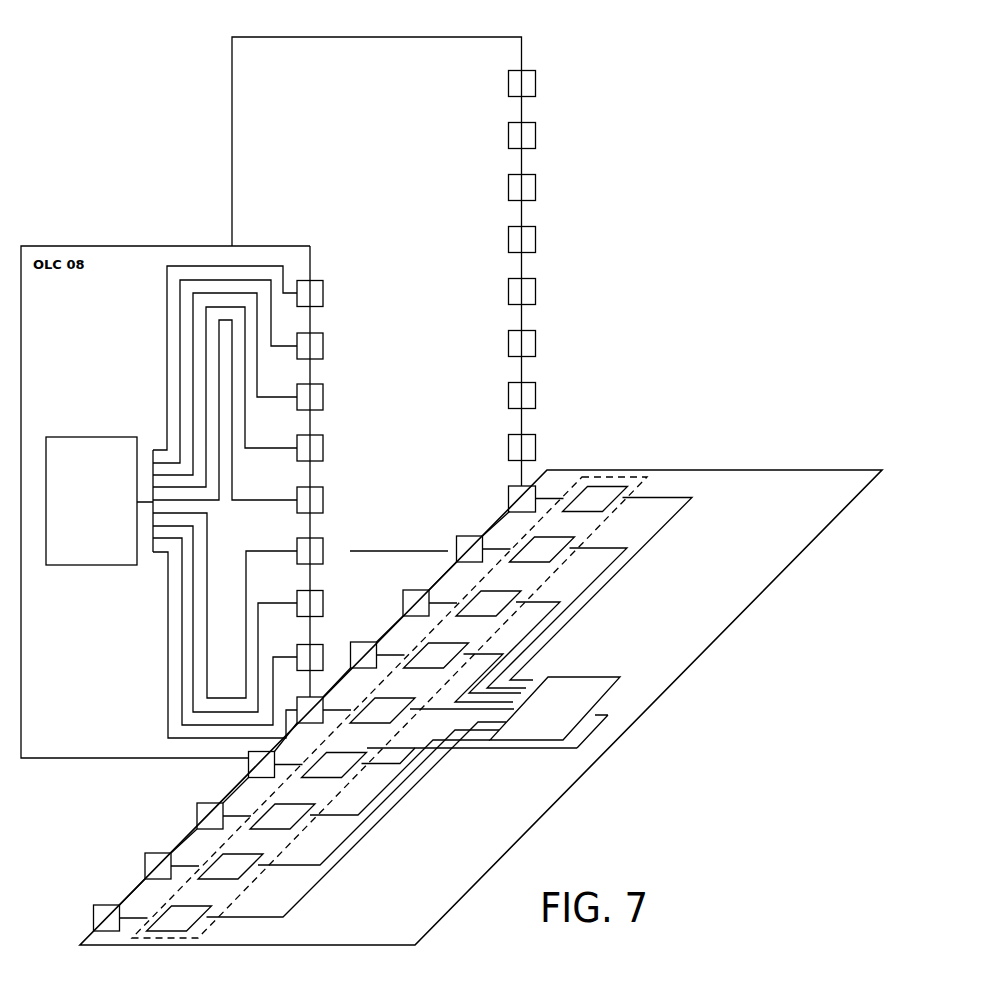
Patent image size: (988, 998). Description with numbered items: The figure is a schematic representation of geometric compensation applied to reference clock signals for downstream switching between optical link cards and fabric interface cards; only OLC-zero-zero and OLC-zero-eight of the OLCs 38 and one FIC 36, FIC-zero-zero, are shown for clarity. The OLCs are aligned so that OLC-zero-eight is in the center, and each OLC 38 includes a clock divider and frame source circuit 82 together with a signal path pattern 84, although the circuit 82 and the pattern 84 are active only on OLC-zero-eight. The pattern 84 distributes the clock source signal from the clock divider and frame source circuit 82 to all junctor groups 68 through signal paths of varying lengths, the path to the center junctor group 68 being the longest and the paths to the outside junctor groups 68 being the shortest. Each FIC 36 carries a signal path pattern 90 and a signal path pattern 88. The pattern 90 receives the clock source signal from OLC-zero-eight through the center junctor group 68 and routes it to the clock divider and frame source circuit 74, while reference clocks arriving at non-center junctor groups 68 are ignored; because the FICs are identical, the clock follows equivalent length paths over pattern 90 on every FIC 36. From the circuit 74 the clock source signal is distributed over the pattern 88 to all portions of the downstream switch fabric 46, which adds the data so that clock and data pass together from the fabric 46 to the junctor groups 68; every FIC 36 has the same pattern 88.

The FIC 36 is at (732, 470).
The OLC 38 is at (433, 37).
The downstream switch fabric 46 is at (622, 477).
The junctor group 68 is at (535, 237).
The clock divider and frame source circuit 74 is at (593, 678).
The clock divider and frame source circuit 82 is at (75, 437).
The signal path pattern 84 is at (122, 323).
The signal path pattern 88 is at (383, 837).
The signal path pattern 90 is at (476, 748).